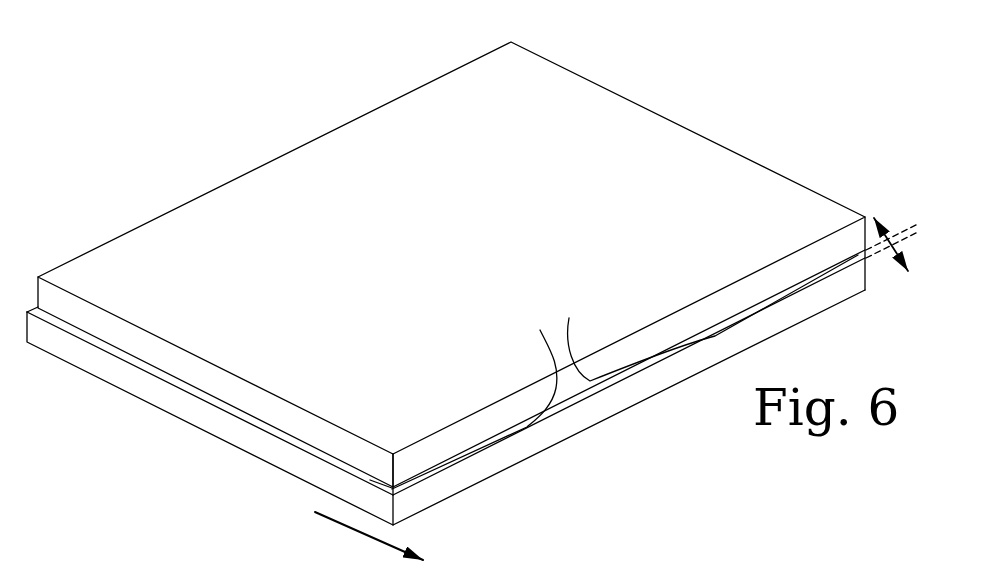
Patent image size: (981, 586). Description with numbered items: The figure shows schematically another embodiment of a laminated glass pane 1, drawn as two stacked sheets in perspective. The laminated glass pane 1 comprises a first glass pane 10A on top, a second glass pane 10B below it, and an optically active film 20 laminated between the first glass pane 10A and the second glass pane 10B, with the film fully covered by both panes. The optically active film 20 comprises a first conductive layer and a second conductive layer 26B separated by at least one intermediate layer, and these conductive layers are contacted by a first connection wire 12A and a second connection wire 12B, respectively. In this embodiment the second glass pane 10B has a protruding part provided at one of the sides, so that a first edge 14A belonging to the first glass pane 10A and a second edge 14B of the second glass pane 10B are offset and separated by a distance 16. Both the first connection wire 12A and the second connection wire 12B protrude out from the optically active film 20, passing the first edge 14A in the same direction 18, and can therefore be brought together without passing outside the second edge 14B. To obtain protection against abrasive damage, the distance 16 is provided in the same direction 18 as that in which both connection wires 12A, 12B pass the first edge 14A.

The laminated glass pane 1 is at (175, 120).
The first glass pane 10A is at (553, 97).
The second glass pane 10B is at (150, 395).
The first connection wire 12A is at (580, 325).
The second connection wire 12B is at (540, 330).
The first edge 14A is at (497, 417).
The second edge 14B is at (455, 482).
The distance 16 is at (894, 263).
The direction 18 is at (382, 536).
The optically active film 20 is at (242, 422).
The second conductive layer 26B is at (87, 338).